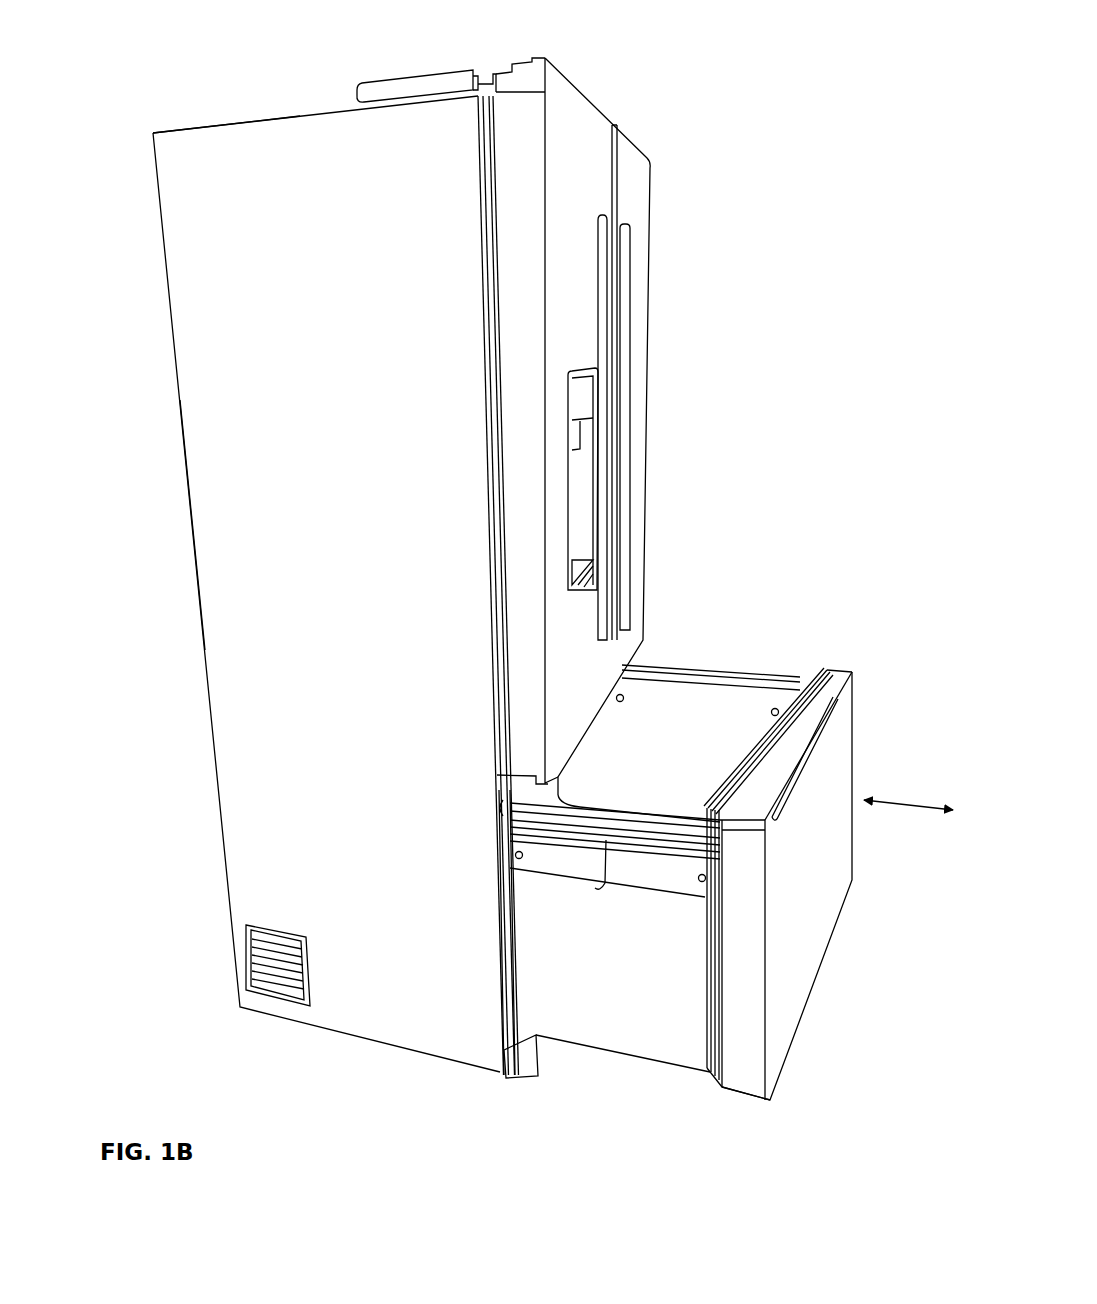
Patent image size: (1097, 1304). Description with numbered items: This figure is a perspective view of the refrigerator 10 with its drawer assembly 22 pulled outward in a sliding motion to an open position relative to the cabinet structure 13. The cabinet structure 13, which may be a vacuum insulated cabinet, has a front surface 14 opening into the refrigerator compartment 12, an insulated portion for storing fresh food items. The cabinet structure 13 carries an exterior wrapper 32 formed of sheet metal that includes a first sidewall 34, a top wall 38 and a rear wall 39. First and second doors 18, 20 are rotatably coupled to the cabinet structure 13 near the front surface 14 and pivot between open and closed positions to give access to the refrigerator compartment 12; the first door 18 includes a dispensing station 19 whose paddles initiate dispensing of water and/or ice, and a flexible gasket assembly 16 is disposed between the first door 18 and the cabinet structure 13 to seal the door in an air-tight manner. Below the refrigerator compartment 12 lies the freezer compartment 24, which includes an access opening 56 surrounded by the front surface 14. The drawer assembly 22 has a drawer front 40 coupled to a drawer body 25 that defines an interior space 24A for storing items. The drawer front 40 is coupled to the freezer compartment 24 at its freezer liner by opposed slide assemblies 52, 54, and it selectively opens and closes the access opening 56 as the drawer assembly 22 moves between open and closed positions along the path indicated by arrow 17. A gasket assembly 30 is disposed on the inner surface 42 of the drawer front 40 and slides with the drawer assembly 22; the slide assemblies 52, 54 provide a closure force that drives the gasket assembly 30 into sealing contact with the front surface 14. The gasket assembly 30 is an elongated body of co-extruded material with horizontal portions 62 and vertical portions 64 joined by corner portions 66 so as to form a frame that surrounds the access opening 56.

The refrigerator 10 is at (210, 86).
The refrigerator compartment 12 is at (322, 402).
The cabinet structure 13 is at (415, 70).
The front surface 14 is at (495, 805).
The gasket assembly 16 is at (483, 215).
The arrow 17 is at (900, 803).
The first door 18 is at (603, 102).
The dispensing station 19 is at (583, 365).
The second door 20 is at (637, 143).
The drawer assembly 22 is at (884, 750).
The freezer compartment 24 is at (305, 836).
The interior space 24A is at (636, 800).
The drawer body 25 is at (668, 652).
The gasket assembly 30 is at (710, 937).
The exterior wrapper 32 is at (135, 197).
The first sidewall 34 is at (290, 614).
The top wall 38 is at (180, 130).
The rear wall 39 is at (190, 520).
The drawer front 40 is at (822, 840).
The inner surface 42 is at (713, 980).
The slide assembly 52 is at (600, 885).
The slide assembly 54 is at (762, 676).
The access opening 56 is at (527, 925).
The horizontal portion 62 is at (817, 670).
The vertical portion 64 is at (712, 1040).
The corner portion 66 is at (707, 798).